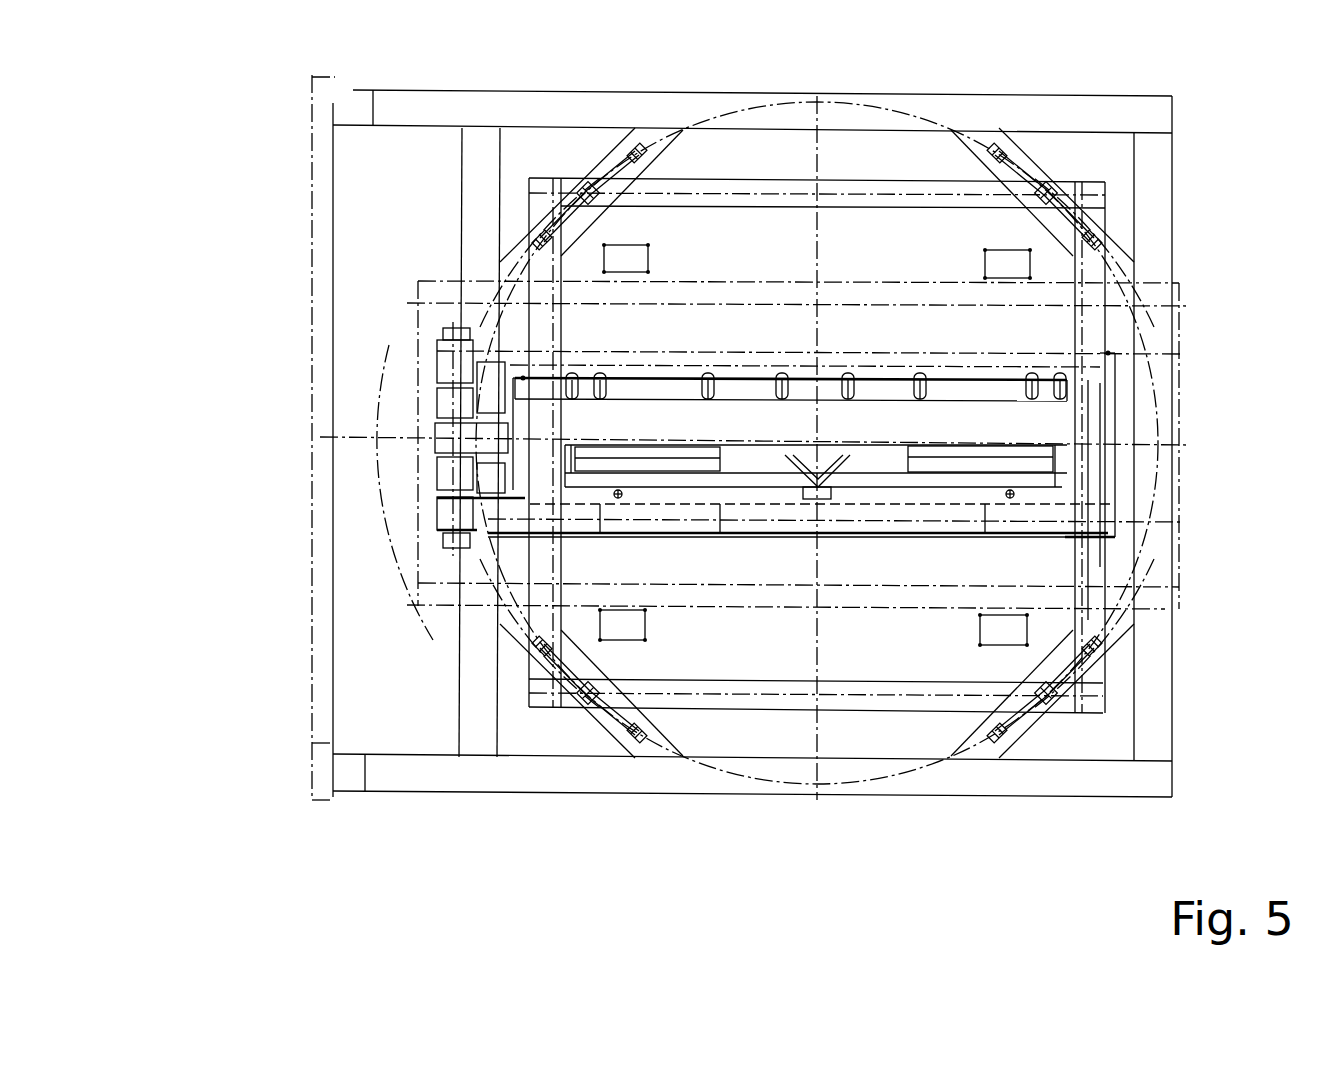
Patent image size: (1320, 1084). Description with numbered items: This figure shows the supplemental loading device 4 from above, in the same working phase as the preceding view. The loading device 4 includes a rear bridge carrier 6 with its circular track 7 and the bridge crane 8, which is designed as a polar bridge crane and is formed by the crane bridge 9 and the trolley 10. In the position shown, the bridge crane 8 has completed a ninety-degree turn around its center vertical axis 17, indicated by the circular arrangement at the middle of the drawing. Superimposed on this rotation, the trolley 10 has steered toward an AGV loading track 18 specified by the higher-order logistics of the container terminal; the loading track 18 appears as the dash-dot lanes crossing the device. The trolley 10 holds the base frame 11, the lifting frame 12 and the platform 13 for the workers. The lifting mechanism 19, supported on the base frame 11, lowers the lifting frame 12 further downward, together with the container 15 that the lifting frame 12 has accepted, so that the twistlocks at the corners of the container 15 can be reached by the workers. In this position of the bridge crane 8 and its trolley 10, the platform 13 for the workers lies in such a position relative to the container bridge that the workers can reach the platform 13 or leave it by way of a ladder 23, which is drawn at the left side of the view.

The supplemental loading device 4 is at (467, 815).
The rear bridge carrier 6 is at (1153, 255).
The circular track 7 is at (1148, 525).
The bridge crane 8 is at (1112, 708).
The crane bridge 9 is at (1095, 210).
The trolley 10 is at (495, 567).
The base frame 11 is at (967, 530).
The lifting frame 12 is at (1110, 388).
The platform 13 is at (680, 622).
The container 15 is at (1042, 428).
The vertical center axis 17 is at (817, 499).
The AGV loading track 18 is at (1203, 307).
The lifting mechanism 19 is at (433, 420).
The ladder 23 is at (345, 482).